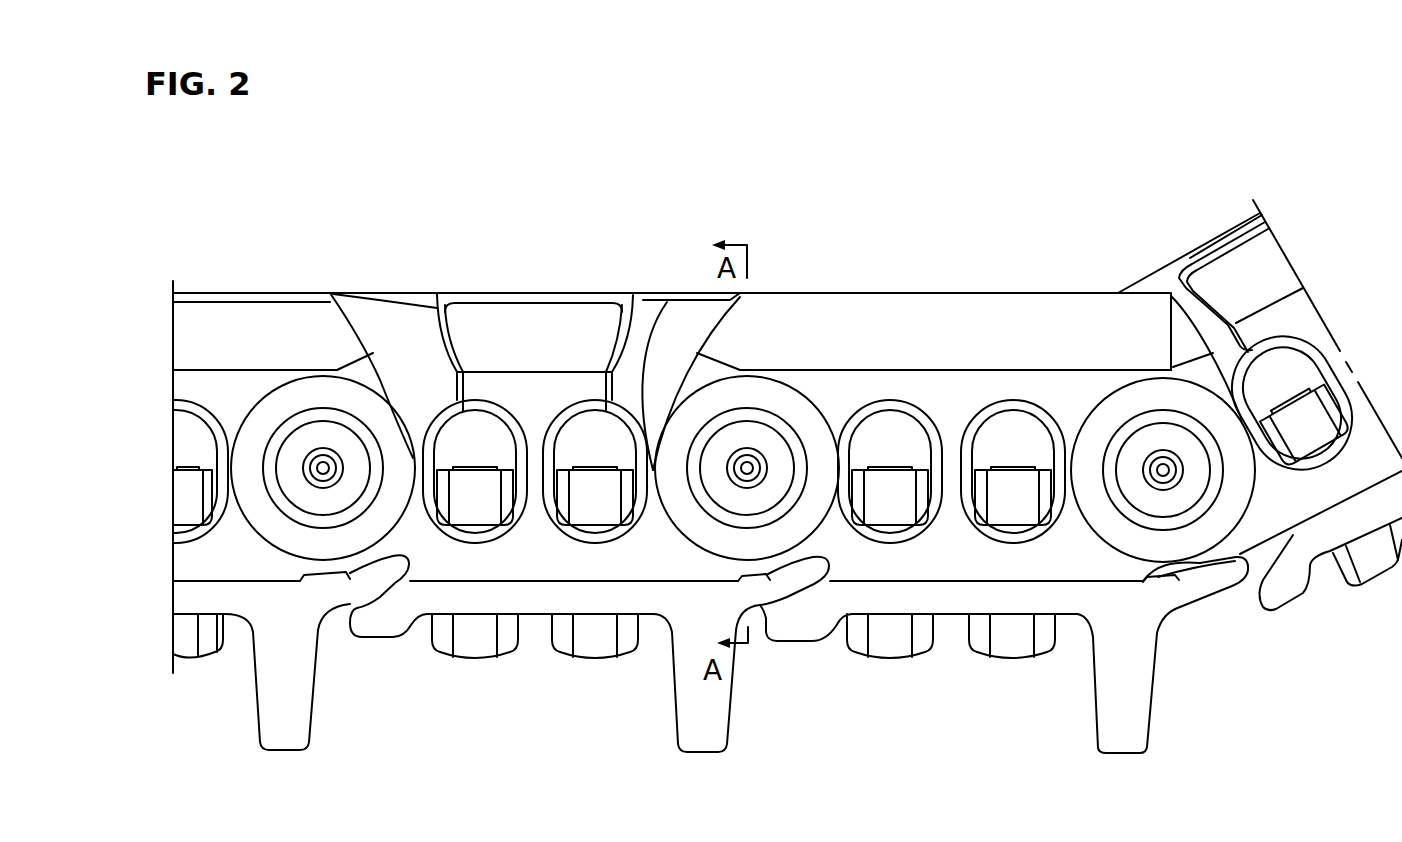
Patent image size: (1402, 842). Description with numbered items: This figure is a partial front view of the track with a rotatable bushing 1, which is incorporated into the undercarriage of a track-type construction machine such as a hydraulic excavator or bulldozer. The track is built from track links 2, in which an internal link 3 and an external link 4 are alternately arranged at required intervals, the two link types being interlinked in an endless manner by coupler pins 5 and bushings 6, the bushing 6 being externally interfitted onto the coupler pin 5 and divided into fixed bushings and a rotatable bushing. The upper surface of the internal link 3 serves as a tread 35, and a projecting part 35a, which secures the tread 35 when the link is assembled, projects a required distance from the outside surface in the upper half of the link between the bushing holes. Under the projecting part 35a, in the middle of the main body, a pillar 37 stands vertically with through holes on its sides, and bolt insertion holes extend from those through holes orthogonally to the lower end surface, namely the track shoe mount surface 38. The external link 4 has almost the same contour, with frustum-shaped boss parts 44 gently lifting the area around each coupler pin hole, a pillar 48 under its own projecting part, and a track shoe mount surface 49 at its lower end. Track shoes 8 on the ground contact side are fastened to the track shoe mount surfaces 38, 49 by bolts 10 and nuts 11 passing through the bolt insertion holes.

The track with a rotatable bushing 1 is at (495, 249).
The track links 2 is at (1073, 268).
The internal link 3 is at (682, 338).
The external link 4 is at (900, 358).
The coupler pin 5 is at (323, 497).
The bushing 6 is at (273, 500).
The track shoe 8 is at (927, 600).
The bolt 10 is at (472, 640).
The nut 11 is at (575, 490).
The tread 35 is at (392, 293).
The projecting part 35a is at (565, 323).
The pillar 37 is at (537, 487).
The track shoe mount surface 38 is at (453, 584).
The boss part 44 is at (300, 397).
The pillar 48 is at (987, 293).
The track shoe mount surface 49 is at (867, 585).